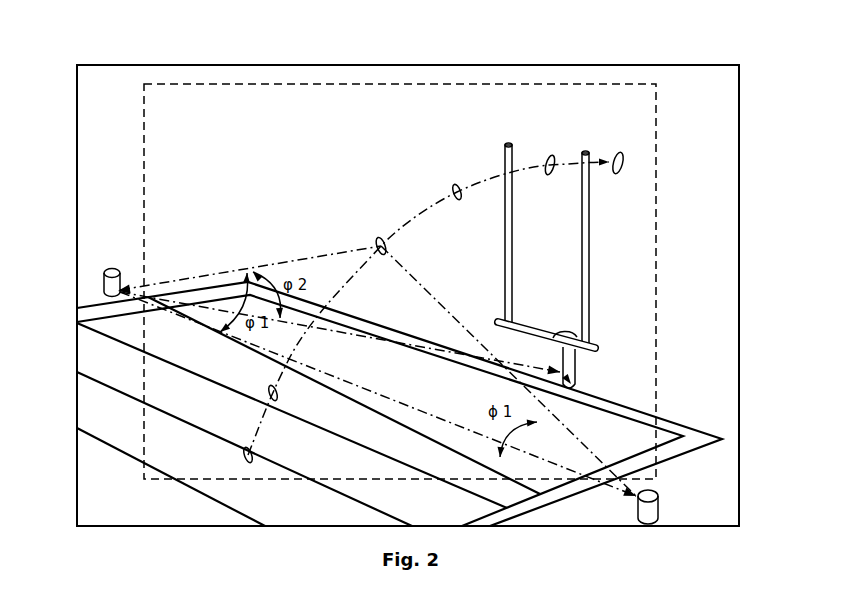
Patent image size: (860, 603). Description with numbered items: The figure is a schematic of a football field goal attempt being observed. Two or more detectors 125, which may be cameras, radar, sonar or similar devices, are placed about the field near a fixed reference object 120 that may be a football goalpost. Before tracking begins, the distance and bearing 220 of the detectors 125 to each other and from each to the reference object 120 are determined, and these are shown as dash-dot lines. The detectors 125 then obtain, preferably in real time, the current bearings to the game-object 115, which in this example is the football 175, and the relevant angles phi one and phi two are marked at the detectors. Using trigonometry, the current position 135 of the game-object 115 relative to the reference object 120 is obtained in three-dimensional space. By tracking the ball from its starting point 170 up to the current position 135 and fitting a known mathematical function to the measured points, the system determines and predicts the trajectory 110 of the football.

The trajectory 110 is at (417, 218).
The game-object 115 is at (628, 153).
The reference object 120 is at (597, 288).
The detectors 125 is at (104, 270).
The current position 135 is at (381, 237).
The starting point 170 is at (245, 457).
The football 175 is at (457, 184).
The distance and bearing 220 is at (320, 263).